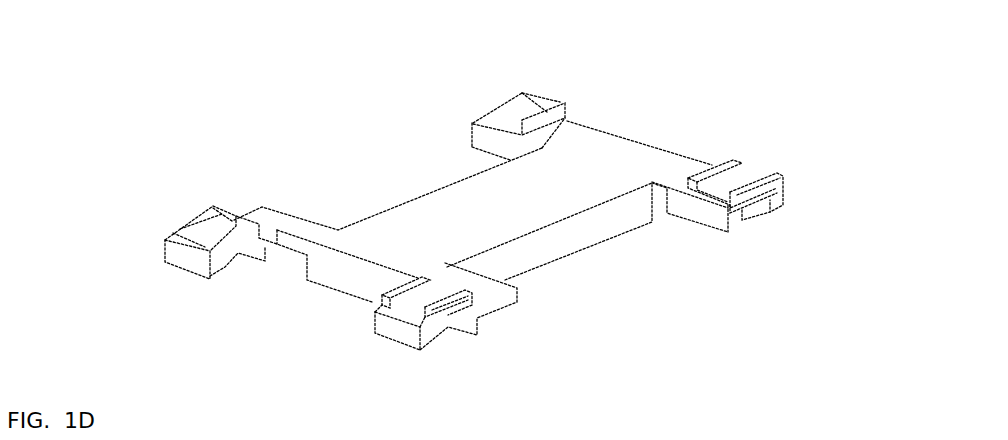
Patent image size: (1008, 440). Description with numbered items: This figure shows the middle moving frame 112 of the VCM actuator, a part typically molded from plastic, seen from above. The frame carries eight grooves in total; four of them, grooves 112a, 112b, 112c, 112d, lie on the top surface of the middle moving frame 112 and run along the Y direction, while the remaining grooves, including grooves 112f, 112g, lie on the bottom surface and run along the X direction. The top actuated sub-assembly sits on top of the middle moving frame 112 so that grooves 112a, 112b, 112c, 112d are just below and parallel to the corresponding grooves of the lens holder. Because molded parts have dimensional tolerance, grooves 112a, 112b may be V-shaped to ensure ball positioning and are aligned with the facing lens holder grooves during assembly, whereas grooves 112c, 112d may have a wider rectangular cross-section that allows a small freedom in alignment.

The middle moving frame 112 is at (440, 62).
The groove 112a is at (733, 181).
The groove 112b is at (425, 298).
The groove 112c is at (513, 106).
The groove 112d is at (213, 227).
The groove 112f is at (748, 215).
The groove 112g is at (240, 263).